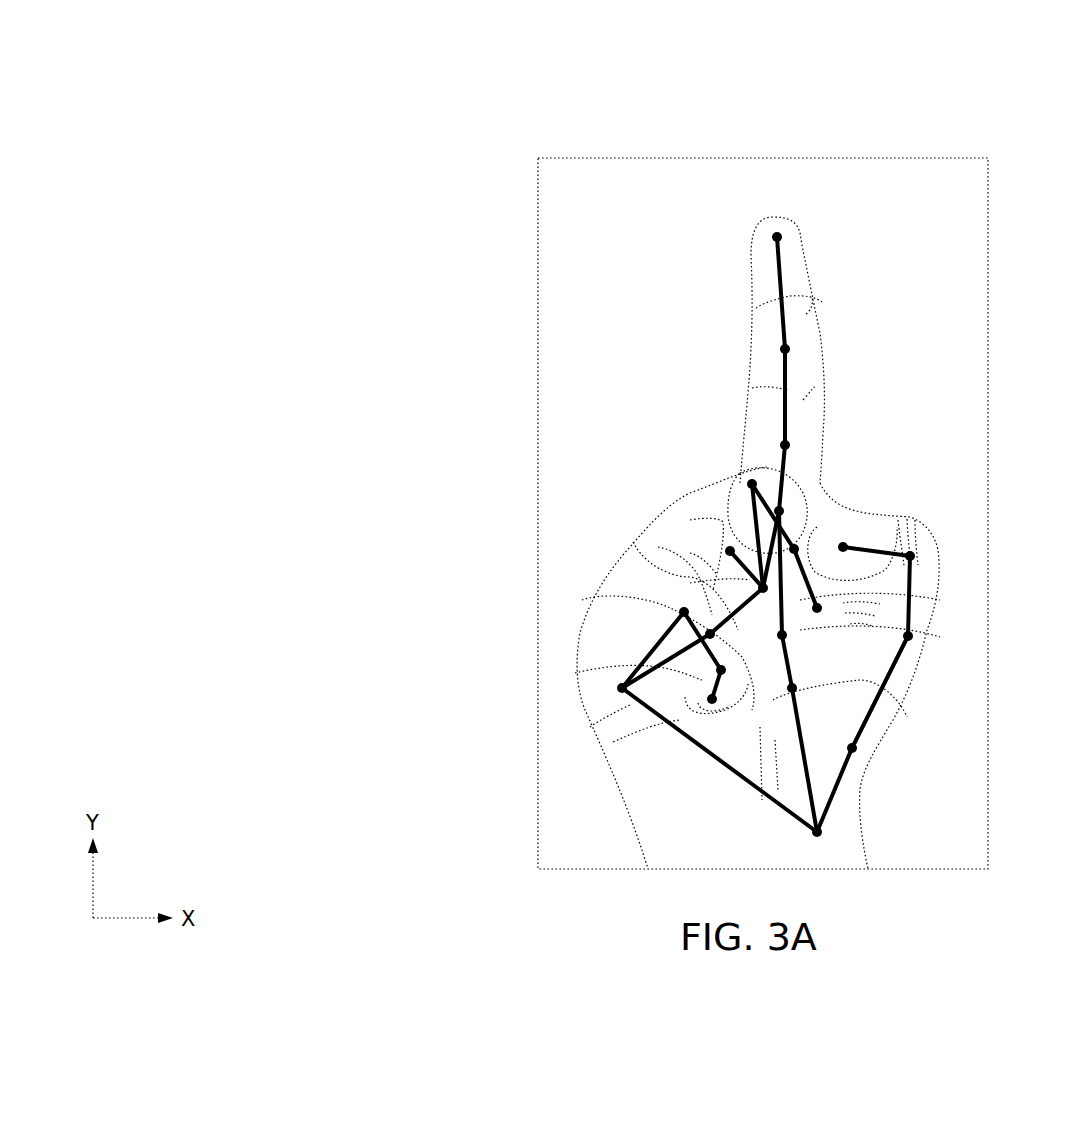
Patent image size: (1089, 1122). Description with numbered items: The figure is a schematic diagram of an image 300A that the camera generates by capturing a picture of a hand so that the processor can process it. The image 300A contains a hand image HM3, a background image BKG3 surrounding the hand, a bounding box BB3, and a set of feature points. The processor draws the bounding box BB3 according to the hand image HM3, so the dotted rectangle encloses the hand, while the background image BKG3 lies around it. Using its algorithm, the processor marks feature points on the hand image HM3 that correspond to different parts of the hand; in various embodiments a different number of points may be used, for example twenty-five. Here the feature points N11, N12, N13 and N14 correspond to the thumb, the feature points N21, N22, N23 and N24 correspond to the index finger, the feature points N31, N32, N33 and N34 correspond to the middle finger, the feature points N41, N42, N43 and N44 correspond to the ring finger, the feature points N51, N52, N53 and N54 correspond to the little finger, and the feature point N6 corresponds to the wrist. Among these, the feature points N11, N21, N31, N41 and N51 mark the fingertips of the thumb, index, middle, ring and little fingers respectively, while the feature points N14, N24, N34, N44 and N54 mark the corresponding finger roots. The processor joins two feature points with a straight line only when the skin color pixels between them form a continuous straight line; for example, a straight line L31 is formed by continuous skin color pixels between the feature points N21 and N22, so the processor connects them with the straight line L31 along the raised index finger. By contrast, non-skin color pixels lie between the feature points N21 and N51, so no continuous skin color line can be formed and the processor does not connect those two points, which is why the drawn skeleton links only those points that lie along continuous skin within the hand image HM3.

The image 300A is at (378, 52).
The bounding box BB3 is at (763, 158).
The background image BKG3 is at (495, 124).
The hand image HM3 is at (623, 795).
The straight line L31 is at (783, 300).
The feature point N6 is at (822, 831).
The feature point N11 is at (847, 544).
The feature point N12 is at (915, 555).
The feature point N13 is at (913, 636).
The feature point N14 is at (857, 748).
The feature point N21 is at (790, 237).
The feature point N22 is at (791, 349).
The feature point N23 is at (791, 445).
The feature point N24 is at (784, 506).
The feature point N31 is at (822, 606).
The feature point N32 is at (800, 543).
The feature point N33 is at (751, 479).
The feature point N34 is at (760, 588).
The feature point N41 is at (786, 637).
The feature point N42 is at (797, 688).
The feature point N43 is at (729, 548).
The feature point N44 is at (707, 634).
The feature point N51 is at (708, 700).
The feature point N52 is at (618, 688).
The feature point N53 is at (680, 611).
The feature point N54 is at (717, 671).